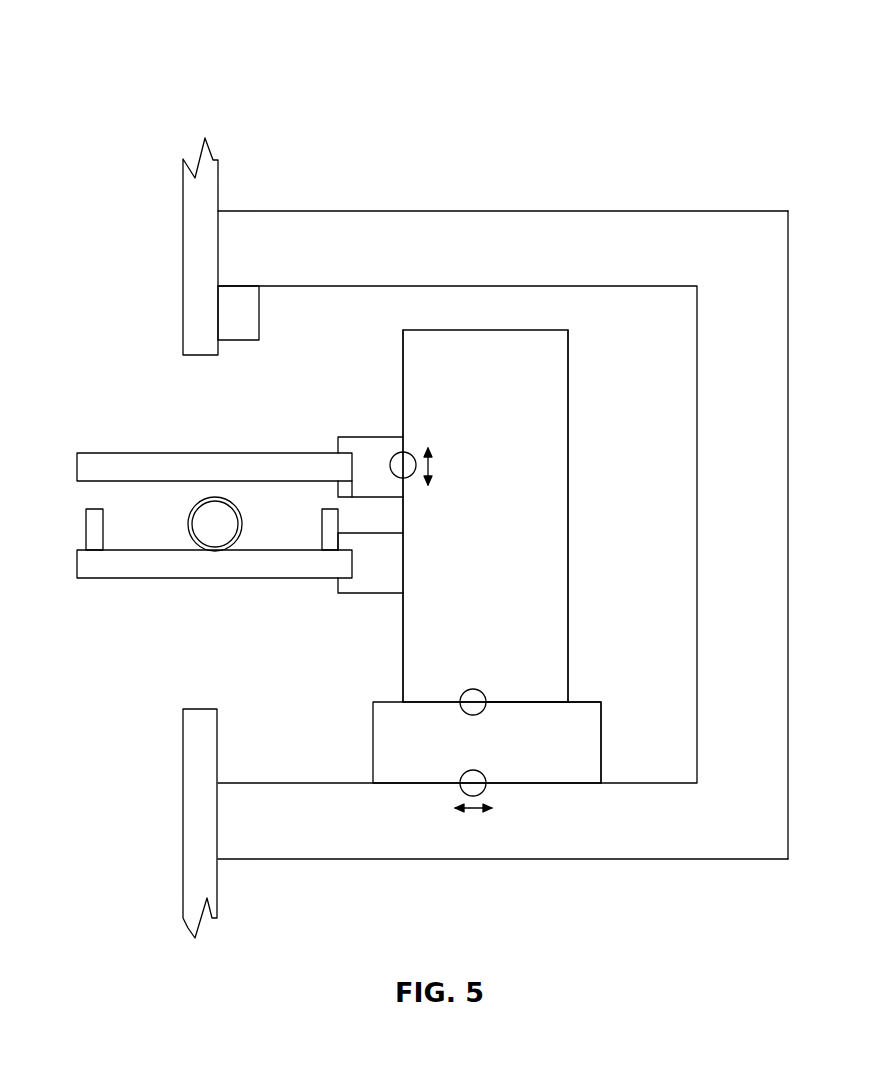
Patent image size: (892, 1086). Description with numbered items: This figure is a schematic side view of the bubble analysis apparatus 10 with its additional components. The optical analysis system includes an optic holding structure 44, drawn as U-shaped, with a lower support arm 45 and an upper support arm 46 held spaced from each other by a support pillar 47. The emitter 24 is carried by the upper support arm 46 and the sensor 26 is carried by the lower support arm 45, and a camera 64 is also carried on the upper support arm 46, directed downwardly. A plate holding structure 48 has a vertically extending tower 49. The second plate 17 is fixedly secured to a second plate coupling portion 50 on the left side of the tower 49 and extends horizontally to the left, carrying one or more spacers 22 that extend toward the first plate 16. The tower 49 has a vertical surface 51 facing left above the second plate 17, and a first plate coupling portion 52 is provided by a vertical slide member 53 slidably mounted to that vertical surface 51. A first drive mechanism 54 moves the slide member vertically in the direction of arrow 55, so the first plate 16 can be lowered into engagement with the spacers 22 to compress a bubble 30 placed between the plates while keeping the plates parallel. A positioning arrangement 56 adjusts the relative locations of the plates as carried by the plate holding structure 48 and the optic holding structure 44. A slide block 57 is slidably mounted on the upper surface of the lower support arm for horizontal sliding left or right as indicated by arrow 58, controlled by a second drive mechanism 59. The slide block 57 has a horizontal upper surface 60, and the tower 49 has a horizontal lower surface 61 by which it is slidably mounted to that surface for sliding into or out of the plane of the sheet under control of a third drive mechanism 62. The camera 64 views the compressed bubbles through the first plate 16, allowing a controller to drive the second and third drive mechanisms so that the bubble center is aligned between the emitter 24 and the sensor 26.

The bubble analysis apparatus 10 is at (138, 58).
The first plate 16 is at (255, 470).
The second plate 17 is at (247, 565).
The spacers 22 is at (88, 530).
The emitter 24 is at (198, 255).
The sensor 26 is at (197, 822).
The bubble 30 is at (187, 515).
The optic holding structure 44 is at (458, 878).
The lower support arm 45 is at (626, 850).
The upper support arm 46 is at (458, 216).
The support pillar 47 is at (773, 457).
The plate holding structure 48 is at (555, 462).
The tower 49 is at (555, 517).
The second plate coupling portion 50 is at (383, 585).
The vertical surface 51 is at (403, 370).
The first plate coupling portion 52 is at (360, 445).
The vertical slide member 53 is at (373, 485).
The first drive mechanism 54 is at (405, 452).
The arrow 55 is at (432, 465).
The positioning arrangement 56 is at (335, 713).
The slide block 57 is at (592, 722).
The arrow 58 is at (472, 815).
The second drive mechanism 59 is at (478, 770).
The horizontal upper surface 60 is at (586, 700).
The horizontal lower surface 61 is at (522, 700).
The third drive mechanism 62 is at (476, 690).
The camera 64 is at (242, 312).